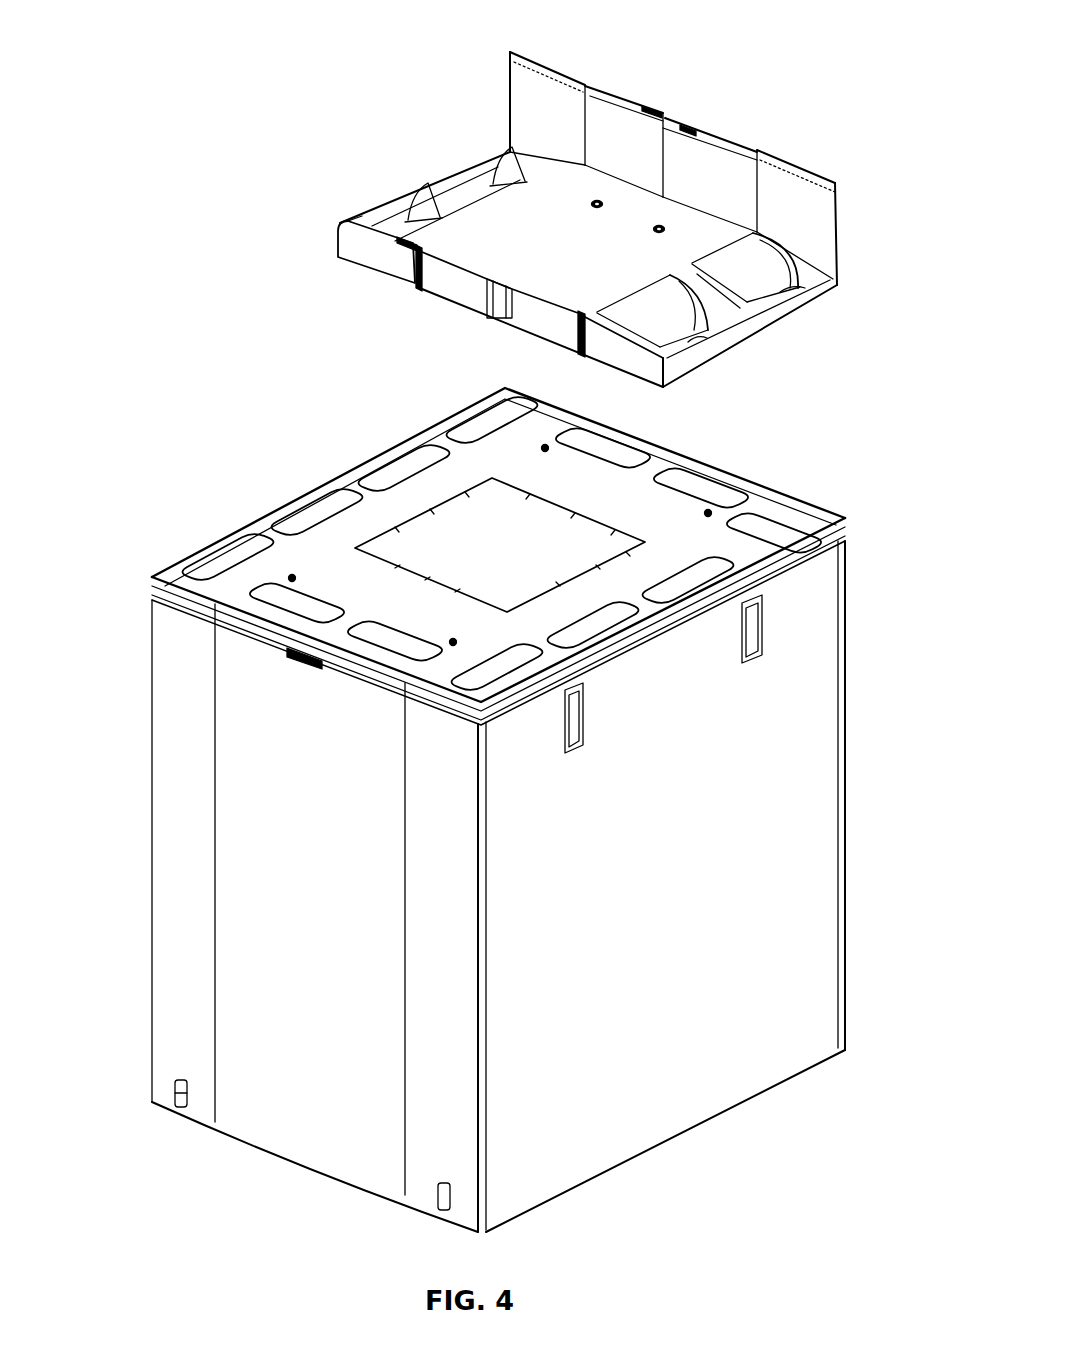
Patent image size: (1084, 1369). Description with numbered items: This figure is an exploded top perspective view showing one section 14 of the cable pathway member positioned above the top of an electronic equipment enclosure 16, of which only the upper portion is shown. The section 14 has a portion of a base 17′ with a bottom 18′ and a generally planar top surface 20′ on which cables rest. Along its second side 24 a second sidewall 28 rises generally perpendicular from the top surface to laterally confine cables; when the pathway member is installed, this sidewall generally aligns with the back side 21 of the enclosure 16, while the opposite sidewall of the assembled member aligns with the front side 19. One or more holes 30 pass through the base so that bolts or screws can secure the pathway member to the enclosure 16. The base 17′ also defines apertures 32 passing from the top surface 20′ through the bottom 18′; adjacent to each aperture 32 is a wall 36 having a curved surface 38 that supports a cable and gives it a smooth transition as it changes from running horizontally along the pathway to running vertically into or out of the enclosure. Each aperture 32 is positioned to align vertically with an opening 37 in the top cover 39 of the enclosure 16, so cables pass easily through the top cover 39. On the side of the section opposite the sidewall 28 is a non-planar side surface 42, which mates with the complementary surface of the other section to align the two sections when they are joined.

The section 14 is at (724, 116).
The electronic equipment enclosure 16 is at (511, 791).
The portion of base 17′ is at (591, 219).
The bottom 18′ is at (370, 270).
The front side 19 is at (283, 953).
The generally planar top surface 20′ is at (507, 172).
The back side 21 is at (852, 640).
The second side 24 is at (610, 82).
The second sidewall 28 is at (818, 220).
The holes 30 is at (597, 200).
The aperture 32 is at (788, 290).
The wall 36 is at (745, 258).
The opening 37 is at (487, 425).
The curved surface 38 is at (720, 270).
The top cover 39 is at (312, 553).
The non-planar side surface 42 is at (455, 293).